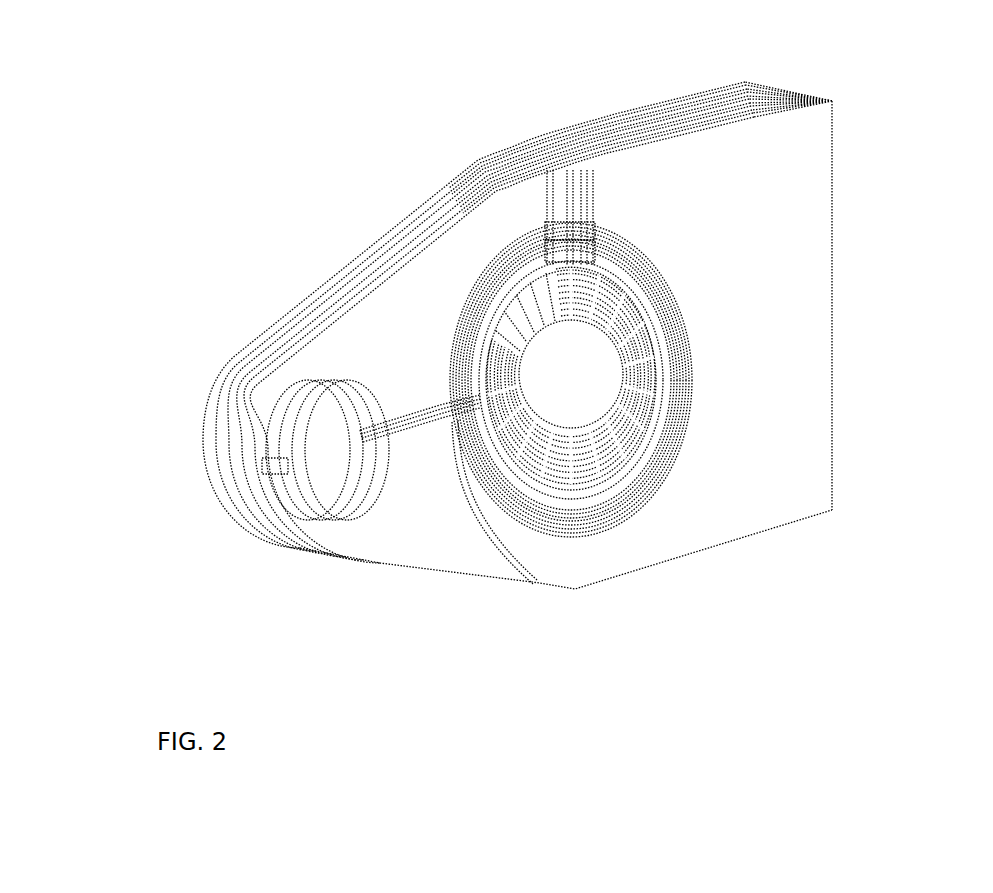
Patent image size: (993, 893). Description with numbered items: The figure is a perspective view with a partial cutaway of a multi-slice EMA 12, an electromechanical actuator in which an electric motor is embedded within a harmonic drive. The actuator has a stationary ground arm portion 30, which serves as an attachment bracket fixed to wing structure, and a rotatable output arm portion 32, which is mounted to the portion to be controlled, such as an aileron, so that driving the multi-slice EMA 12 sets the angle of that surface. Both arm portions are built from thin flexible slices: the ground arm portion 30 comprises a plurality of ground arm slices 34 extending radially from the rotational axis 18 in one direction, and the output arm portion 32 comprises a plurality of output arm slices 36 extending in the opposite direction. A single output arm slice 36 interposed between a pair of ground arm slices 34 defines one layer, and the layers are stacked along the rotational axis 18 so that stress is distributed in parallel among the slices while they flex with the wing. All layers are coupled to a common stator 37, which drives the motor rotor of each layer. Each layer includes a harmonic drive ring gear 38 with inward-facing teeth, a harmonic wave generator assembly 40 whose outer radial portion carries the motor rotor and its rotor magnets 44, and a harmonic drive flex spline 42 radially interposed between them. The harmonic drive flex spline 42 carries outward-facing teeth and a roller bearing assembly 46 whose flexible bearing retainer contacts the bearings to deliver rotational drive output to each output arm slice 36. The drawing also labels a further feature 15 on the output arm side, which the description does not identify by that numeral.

The multi-slice EMA 12 is at (620, 618).
The bushing 15 is at (297, 438).
The rotational axis 18 is at (600, 375).
The ground arm portion 30 is at (841, 360).
The output arm portion 32 is at (377, 563).
The ground arm slices 34 is at (585, 177).
The output arm slices 36 is at (300, 510).
The stator 37 is at (614, 473).
The harmonic drive ring gear 38 is at (687, 274).
The harmonic wave generator assembly 40 is at (531, 241).
The harmonic drive flex spline 42 is at (639, 228).
The rotor magnets 44 is at (530, 255).
The roller bearing assembly 46 is at (466, 391).